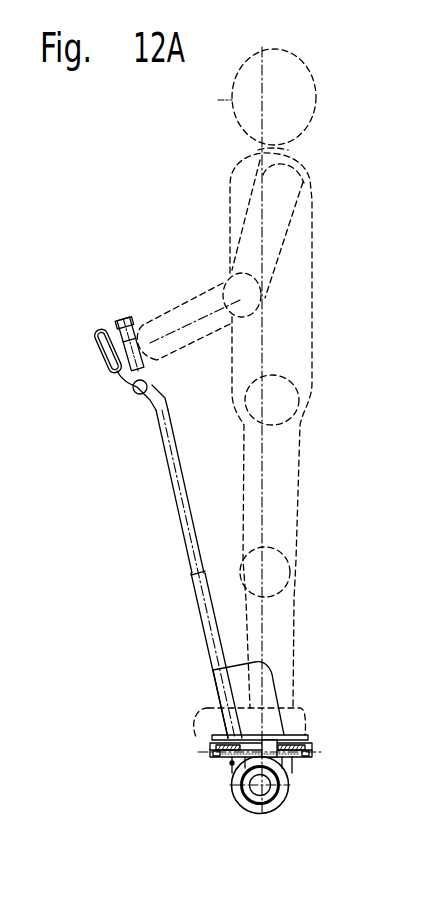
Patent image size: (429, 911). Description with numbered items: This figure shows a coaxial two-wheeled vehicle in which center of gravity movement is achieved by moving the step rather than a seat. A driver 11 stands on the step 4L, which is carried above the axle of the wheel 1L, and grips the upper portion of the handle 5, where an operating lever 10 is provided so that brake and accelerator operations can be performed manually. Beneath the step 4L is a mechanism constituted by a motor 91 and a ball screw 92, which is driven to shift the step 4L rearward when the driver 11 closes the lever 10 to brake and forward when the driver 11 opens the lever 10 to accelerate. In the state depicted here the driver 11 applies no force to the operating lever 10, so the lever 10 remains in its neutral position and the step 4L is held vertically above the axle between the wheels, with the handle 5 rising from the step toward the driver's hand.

The driver 11 is at (312, 234).
The operating lever 10 is at (97, 355).
The handle 5 is at (188, 533).
The step 4L is at (310, 734).
The motor 91 is at (222, 762).
The ball screw 92 is at (297, 762).
The wheel 1L is at (273, 808).